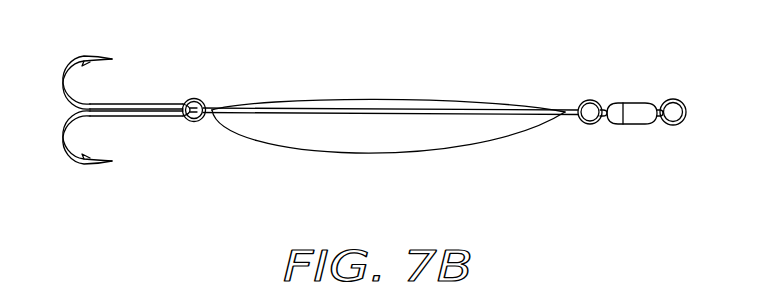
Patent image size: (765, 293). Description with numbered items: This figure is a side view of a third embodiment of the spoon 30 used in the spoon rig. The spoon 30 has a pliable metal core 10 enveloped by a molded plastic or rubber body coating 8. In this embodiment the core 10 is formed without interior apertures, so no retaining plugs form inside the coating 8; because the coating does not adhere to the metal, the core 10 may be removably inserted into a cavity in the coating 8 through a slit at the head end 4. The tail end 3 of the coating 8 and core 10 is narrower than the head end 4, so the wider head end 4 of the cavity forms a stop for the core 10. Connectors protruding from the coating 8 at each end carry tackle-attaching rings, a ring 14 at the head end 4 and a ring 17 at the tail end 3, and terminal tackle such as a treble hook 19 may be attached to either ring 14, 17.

The treble hook 19 is at (85, 62).
The ring 17 is at (192, 122).
The core 10 is at (402, 108).
The head end 4 is at (399, 128).
The body coating 8 is at (352, 140).
The tail end 3 is at (508, 142).
The spoon 30 is at (527, 98).
The ring 14 is at (598, 102).